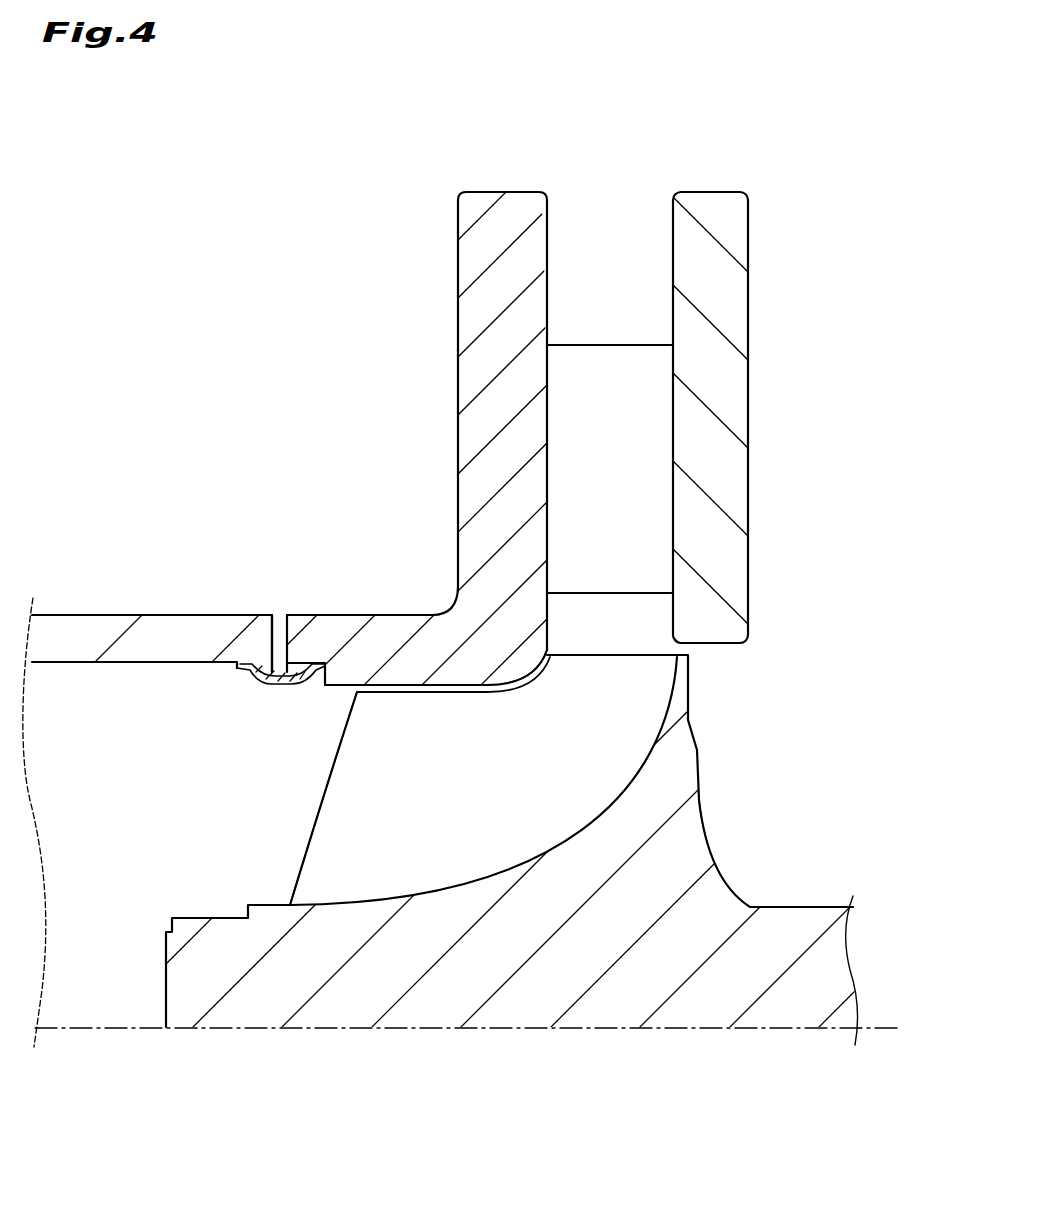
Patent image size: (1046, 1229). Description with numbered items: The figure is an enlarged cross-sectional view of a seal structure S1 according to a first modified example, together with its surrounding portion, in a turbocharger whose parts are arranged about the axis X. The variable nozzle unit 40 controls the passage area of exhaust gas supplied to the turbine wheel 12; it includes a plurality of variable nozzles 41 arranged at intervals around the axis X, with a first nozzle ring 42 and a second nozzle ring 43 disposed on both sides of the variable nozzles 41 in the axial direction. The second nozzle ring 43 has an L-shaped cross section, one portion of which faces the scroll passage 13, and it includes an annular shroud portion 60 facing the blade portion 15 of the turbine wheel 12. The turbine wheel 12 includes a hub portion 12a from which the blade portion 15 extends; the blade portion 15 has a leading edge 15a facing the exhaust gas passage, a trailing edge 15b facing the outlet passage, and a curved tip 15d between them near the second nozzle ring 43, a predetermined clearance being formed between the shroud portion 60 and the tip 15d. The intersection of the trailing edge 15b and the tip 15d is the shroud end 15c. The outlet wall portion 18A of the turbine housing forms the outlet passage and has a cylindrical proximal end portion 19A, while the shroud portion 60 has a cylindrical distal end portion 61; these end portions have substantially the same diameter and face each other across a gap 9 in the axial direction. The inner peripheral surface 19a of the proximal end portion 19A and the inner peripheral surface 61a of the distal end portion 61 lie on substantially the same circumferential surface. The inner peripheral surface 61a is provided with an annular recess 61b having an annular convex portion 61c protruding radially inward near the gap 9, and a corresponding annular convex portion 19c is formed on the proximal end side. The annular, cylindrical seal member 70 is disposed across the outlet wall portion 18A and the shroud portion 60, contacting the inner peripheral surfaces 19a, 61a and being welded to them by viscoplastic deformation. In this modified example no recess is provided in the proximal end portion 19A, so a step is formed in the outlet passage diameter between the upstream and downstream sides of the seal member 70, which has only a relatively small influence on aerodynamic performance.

The gap 9 is at (278, 632).
The turbine wheel 12 is at (523, 887).
The hub portion 12a is at (660, 815).
The scroll passage 13 is at (184, 299).
The blade portion 15 is at (523, 527).
The leading edge 15a is at (618, 655).
The trailing edge 15b is at (307, 838).
The shroud end 15c is at (358, 688).
The tip 15d is at (507, 682).
The outlet wall portion 18A is at (102, 608).
The proximal end portion 19A is at (252, 608).
The inner peripheral surface 19a is at (207, 664).
The annular convex portion 19c is at (258, 672).
The variable nozzle unit 40 is at (666, 469).
The variable nozzles 41 is at (612, 352).
The first nozzle ring 42 is at (708, 206).
The second nozzle ring 43 is at (503, 190).
The shroud portion 60 is at (404, 600).
The distal end portion 61 is at (310, 608).
The inner peripheral surface 61a is at (323, 667).
The annular recess 61b is at (312, 667).
The annular convex portion 61c is at (297, 668).
The seal member 70 is at (268, 692).
The seal structure S1 is at (281, 482).
The axis X is at (873, 1032).